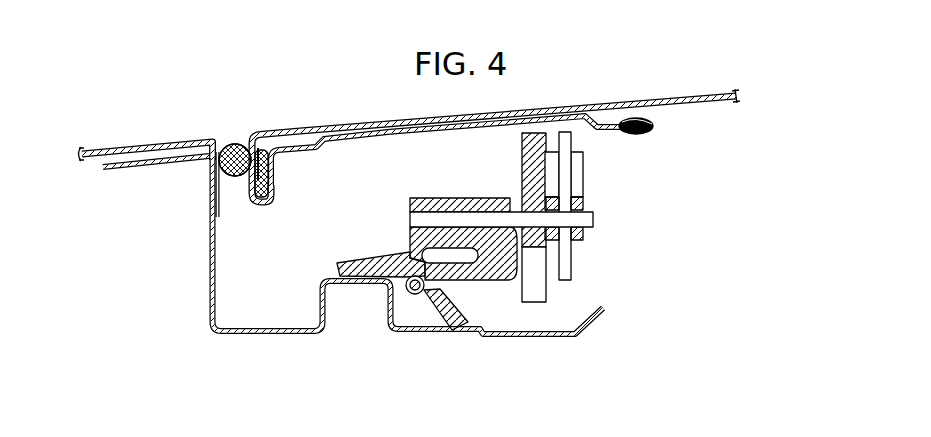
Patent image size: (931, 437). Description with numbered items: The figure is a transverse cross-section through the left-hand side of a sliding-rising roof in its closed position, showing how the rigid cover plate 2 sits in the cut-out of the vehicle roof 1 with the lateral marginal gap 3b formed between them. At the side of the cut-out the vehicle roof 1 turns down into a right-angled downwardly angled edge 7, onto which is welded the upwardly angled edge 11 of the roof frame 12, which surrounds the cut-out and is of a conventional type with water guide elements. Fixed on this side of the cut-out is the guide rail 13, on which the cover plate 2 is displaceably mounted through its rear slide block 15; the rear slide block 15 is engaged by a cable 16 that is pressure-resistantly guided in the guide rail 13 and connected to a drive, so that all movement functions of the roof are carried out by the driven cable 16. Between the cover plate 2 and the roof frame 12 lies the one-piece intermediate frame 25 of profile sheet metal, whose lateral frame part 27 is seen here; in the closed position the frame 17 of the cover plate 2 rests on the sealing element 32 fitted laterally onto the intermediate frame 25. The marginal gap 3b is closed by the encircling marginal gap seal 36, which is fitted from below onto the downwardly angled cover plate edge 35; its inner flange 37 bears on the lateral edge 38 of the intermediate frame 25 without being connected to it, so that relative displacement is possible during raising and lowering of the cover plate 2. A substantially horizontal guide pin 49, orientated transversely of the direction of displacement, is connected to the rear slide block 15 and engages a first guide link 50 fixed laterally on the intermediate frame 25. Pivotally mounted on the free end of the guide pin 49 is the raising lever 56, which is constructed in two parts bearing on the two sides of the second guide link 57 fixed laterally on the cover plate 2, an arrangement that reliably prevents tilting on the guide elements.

The vehicle roof 1 is at (131, 151).
The cover plate 2 is at (691, 94).
The lateral marginal gap 3b is at (241, 120).
The downwardly angled edge 7 is at (222, 196).
The upwardly angled edge 11 is at (210, 241).
The roof frame 12 is at (258, 340).
The guide rail 13 is at (395, 247).
The rear slide block 15 is at (494, 277).
The cable 16 is at (405, 287).
The frame 17 is at (304, 135).
The intermediate frame 25 is at (448, 140).
The lateral frame part 27 is at (344, 150).
The sealing element 32 is at (655, 125).
The downwardly angled cover plate edge 35 is at (270, 185).
The marginal gap seal 36 is at (226, 146).
The inner flange 37 is at (268, 166).
The lateral edge 38 is at (266, 200).
The guide pin 49 is at (583, 221).
The first guide link 50 is at (533, 174).
The raising lever 56 is at (578, 170).
The second guide link 57 is at (565, 183).